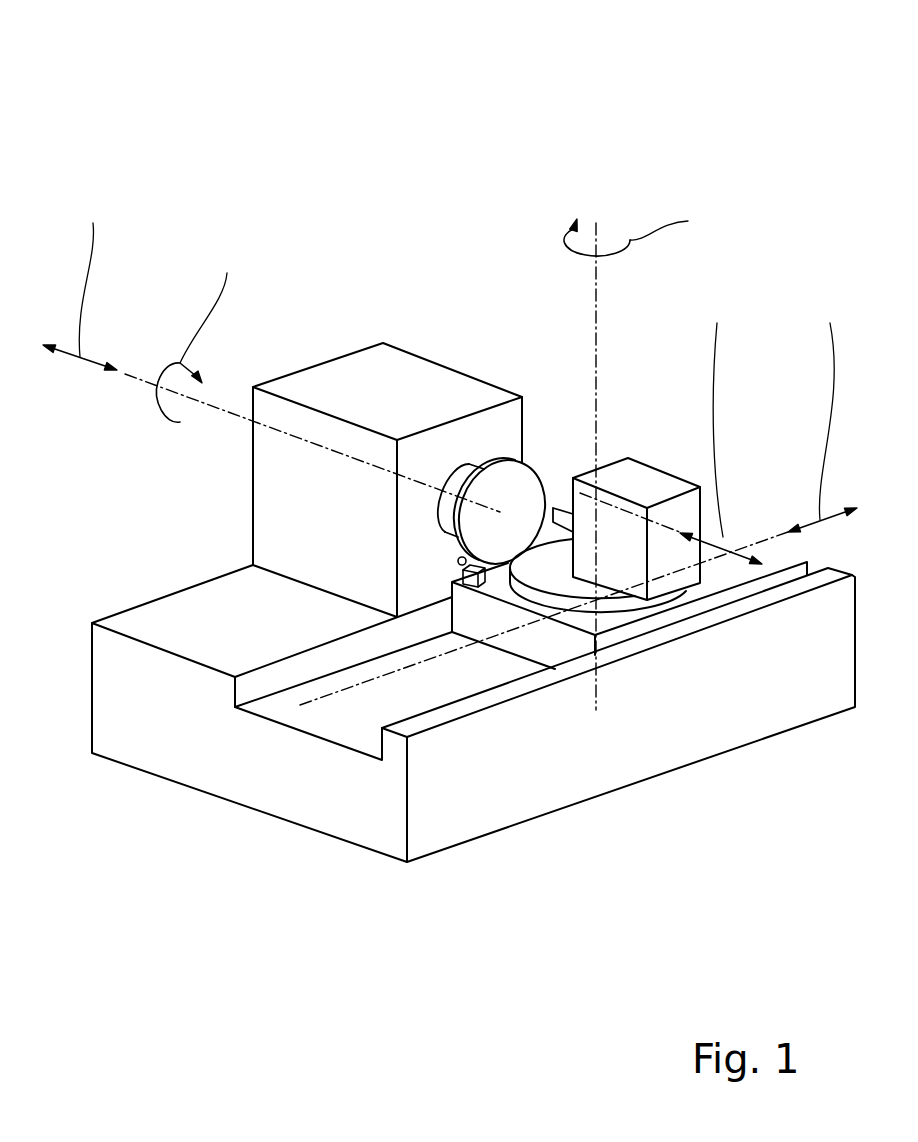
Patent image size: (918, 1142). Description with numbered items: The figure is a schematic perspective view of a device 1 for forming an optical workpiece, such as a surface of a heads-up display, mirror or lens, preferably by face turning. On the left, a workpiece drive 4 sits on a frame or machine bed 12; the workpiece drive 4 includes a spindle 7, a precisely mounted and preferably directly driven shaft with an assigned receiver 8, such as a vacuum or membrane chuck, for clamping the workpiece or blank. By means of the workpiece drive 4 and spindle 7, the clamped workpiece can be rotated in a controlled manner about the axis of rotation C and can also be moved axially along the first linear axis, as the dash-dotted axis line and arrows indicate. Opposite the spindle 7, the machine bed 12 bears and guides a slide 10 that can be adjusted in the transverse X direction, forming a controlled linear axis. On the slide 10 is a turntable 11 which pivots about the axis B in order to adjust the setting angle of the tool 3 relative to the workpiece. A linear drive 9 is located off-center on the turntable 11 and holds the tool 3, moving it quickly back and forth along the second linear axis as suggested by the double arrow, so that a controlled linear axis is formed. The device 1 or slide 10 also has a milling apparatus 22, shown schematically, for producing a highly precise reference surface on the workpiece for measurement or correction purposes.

The device 1 is at (288, 151).
The tool 3 is at (553, 507).
The workpiece drive 4 is at (293, 483).
The spindle 7 is at (462, 477).
The receiver 8 is at (523, 487).
The linear drive 9 is at (637, 570).
The slide 10 is at (523, 645).
The turntable 11 is at (553, 580).
The machine bed 12 is at (160, 742).
The milling apparatus 22 is at (458, 565).